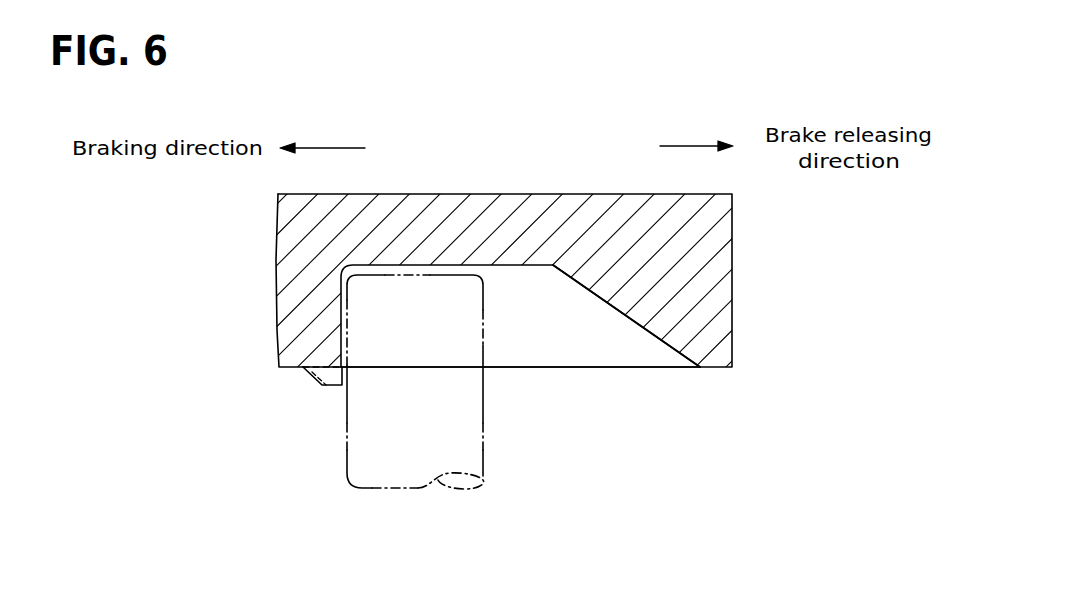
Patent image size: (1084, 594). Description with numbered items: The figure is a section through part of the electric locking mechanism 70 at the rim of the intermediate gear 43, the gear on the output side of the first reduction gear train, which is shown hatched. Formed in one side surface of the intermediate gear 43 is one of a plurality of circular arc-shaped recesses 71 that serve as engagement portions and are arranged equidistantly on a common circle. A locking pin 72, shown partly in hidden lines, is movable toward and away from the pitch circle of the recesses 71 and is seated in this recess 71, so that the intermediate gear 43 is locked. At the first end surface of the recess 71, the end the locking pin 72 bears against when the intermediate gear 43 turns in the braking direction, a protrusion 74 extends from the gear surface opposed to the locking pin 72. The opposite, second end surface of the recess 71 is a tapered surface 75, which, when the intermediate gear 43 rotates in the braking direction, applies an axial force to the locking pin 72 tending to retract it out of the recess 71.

The intermediate gear 43 is at (475, 212).
The electric locking mechanism 70 is at (600, 368).
The recess 71 is at (531, 347).
The locking pin 72 is at (350, 455).
The protrusion 74 is at (330, 387).
The tapered surface 75 is at (652, 340).